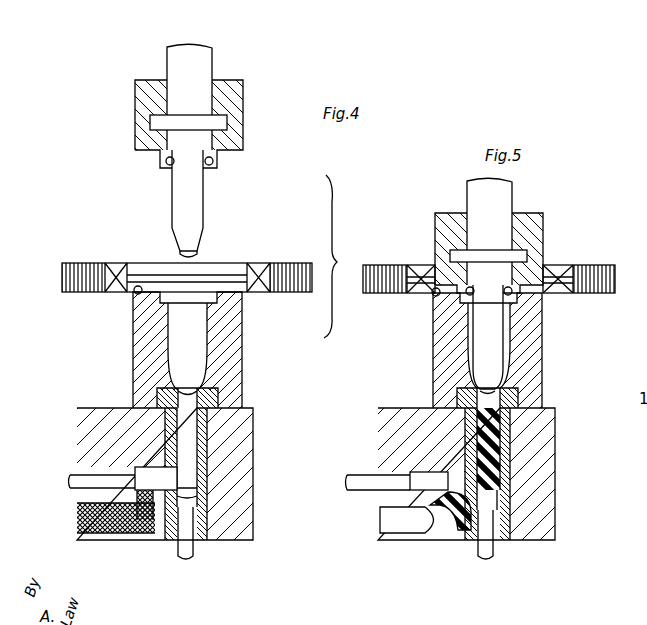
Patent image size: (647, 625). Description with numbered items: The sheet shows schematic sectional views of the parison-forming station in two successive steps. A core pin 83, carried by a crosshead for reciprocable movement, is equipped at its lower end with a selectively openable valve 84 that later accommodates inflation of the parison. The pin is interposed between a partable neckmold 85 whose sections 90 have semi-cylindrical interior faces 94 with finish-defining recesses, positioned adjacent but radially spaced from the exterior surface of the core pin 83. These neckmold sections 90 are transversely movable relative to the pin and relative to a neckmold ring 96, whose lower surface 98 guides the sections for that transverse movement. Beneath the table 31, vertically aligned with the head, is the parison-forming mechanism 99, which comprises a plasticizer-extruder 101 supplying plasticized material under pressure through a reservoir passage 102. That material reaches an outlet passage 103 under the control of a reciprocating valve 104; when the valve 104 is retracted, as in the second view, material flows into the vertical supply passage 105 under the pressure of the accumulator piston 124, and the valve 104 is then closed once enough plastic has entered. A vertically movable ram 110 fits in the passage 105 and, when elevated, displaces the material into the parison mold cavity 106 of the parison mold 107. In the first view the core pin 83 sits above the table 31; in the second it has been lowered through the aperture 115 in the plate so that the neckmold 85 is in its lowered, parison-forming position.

In FIG. 4, the table 31 is at (109, 264).
In FIG. 5, the table 31 is at (418, 265).
In FIG. 4, the core pin 83 is at (203, 193).
In FIG. 5, the core pin 83 is at (503, 345).
In FIG. 4, the selectively openable valve 84 is at (197, 252).
In FIG. 4, the partable neckmold 85 is at (262, 146).
In FIG. 4, the neckmold sections 90 is at (243, 94).
In FIG. 5, the neckmold sections 90 is at (543, 223).
In FIG. 4, the semi-cylindrical interior faces 94 is at (172, 166).
In FIG. 4, the neckmold ring 96 is at (227, 124).
In FIG. 5, the neckmold ring 96 is at (527, 252).
In FIG. 4, the lower surface 98 is at (214, 158).
In FIG. 5, the lower surface 98 is at (513, 297).
In FIG. 4, the parison-forming mechanism 99 is at (251, 376).
In FIG. 5, the parison-forming mechanism 99 is at (558, 384).
In FIG. 4, the plasticizer-extruder 101 is at (74, 406).
In FIG. 5, the plasticizer-extruder 101 is at (378, 412).
In FIG. 4, the reservoir passage 102 is at (88, 527).
In FIG. 5, the reservoir passage 102 is at (405, 535).
In FIG. 4, the outlet passage 103 is at (158, 532).
In FIG. 4, the reciprocating valve 104 is at (157, 467).
In FIG. 5, the reciprocating valve 104 is at (428, 472).
In FIG. 4, the vertical supply passage 105 is at (193, 431).
In FIG. 4, the parison mold cavity 106 is at (199, 338).
In FIG. 4, the parison mold 107 is at (145, 355).
In FIG. 5, the parison mold 107 is at (452, 334).
In FIG. 4, the vertically movable ram 110 is at (195, 556).
In FIG. 5, the vertically movable ram 110 is at (488, 560).
In FIG. 4, the aperture 115 is at (134, 292).
In FIG. 5, the aperture 115 is at (432, 294).
In FIG. 5, the accumulator piston 124 is at (382, 522).